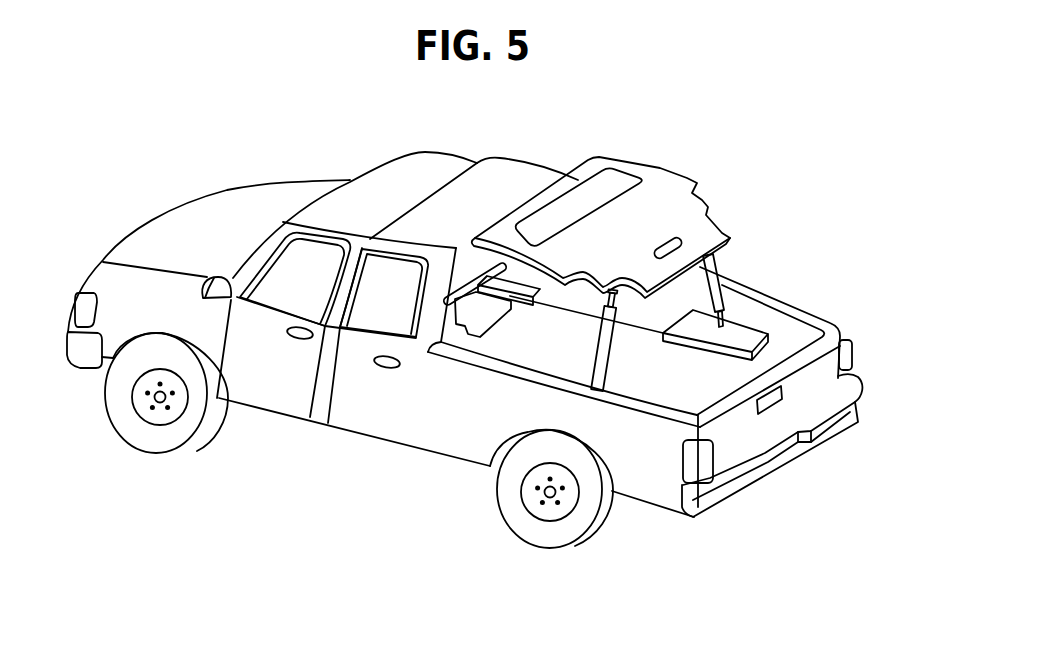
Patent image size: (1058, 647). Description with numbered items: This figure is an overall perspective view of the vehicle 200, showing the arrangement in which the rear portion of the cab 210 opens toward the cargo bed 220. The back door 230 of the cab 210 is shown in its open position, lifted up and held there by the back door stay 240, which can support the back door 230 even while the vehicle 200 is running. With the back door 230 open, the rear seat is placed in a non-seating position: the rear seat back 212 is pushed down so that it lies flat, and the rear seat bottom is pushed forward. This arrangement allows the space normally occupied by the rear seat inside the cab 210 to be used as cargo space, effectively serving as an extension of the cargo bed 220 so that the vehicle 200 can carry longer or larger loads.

The vehicle 200 is at (260, 494).
The cab 210 is at (428, 146).
The rear seat back 212 is at (532, 277).
The cargo bed 220 is at (700, 385).
The back door 230 is at (693, 218).
The back door stay 240 is at (612, 358).